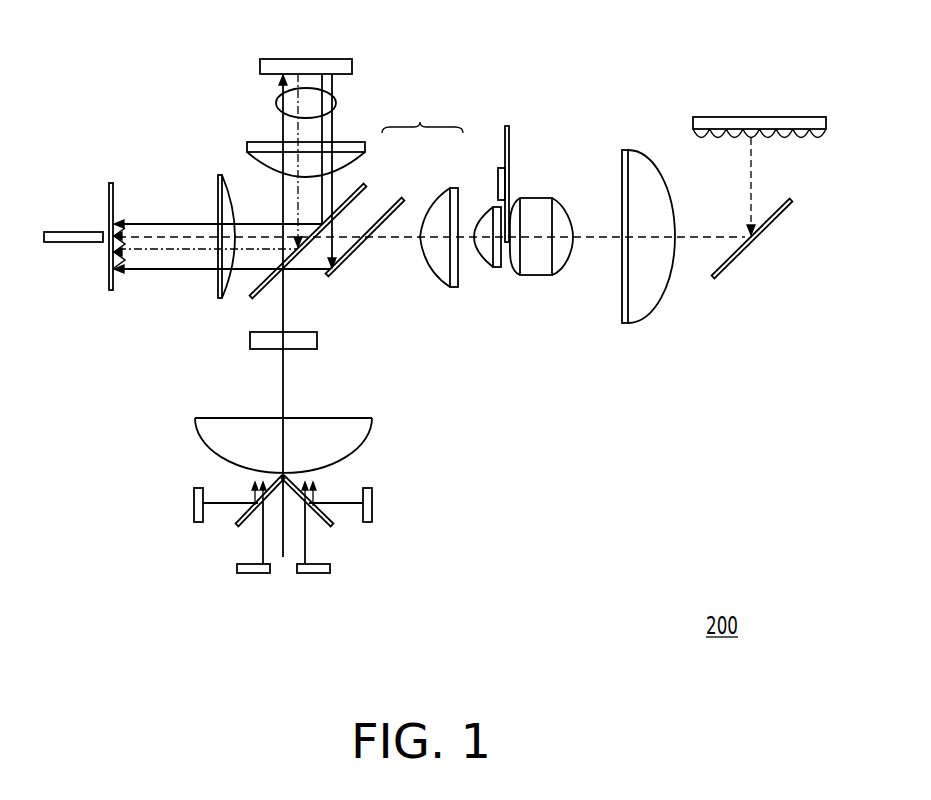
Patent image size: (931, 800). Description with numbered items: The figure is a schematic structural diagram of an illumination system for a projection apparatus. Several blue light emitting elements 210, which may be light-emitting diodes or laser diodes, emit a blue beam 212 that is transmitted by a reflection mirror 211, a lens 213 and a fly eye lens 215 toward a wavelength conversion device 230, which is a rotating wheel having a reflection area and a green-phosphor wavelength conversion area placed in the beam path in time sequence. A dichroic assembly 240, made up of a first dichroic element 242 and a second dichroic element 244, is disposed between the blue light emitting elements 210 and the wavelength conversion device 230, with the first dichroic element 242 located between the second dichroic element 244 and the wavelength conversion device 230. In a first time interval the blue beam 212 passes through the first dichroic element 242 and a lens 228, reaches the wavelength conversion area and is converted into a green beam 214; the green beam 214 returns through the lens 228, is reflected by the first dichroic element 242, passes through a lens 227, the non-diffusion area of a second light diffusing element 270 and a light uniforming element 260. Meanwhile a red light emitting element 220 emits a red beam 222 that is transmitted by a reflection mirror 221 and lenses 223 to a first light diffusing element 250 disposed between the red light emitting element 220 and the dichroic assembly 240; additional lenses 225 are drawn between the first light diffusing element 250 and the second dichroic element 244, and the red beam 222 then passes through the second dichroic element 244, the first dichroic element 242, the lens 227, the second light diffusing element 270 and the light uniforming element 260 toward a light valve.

The blue light emitting element 210 is at (193, 507).
The reflection mirror 211 is at (243, 523).
The blue beam 212 is at (285, 388).
The lens 213 is at (246, 417).
The green beam 214 is at (153, 252).
The fly eye lens 215 is at (260, 341).
The red light emitting element 220 is at (760, 124).
The reflection mirror 221 is at (731, 262).
The red beam 222 is at (752, 178).
The lenses 223 is at (540, 276).
The lens 225 is at (450, 286).
The lens 227 is at (216, 188).
The lens 228 is at (277, 103).
The wavelength conversion device 230 is at (303, 58).
The dichroic assembly 240 is at (357, 198).
The first dichroic element 242 is at (343, 210).
The second dichroic element 244 is at (403, 213).
The first light diffusing element 250 is at (510, 145).
The light uniforming element 260 is at (77, 231).
The second light diffusing element 270 is at (110, 182).